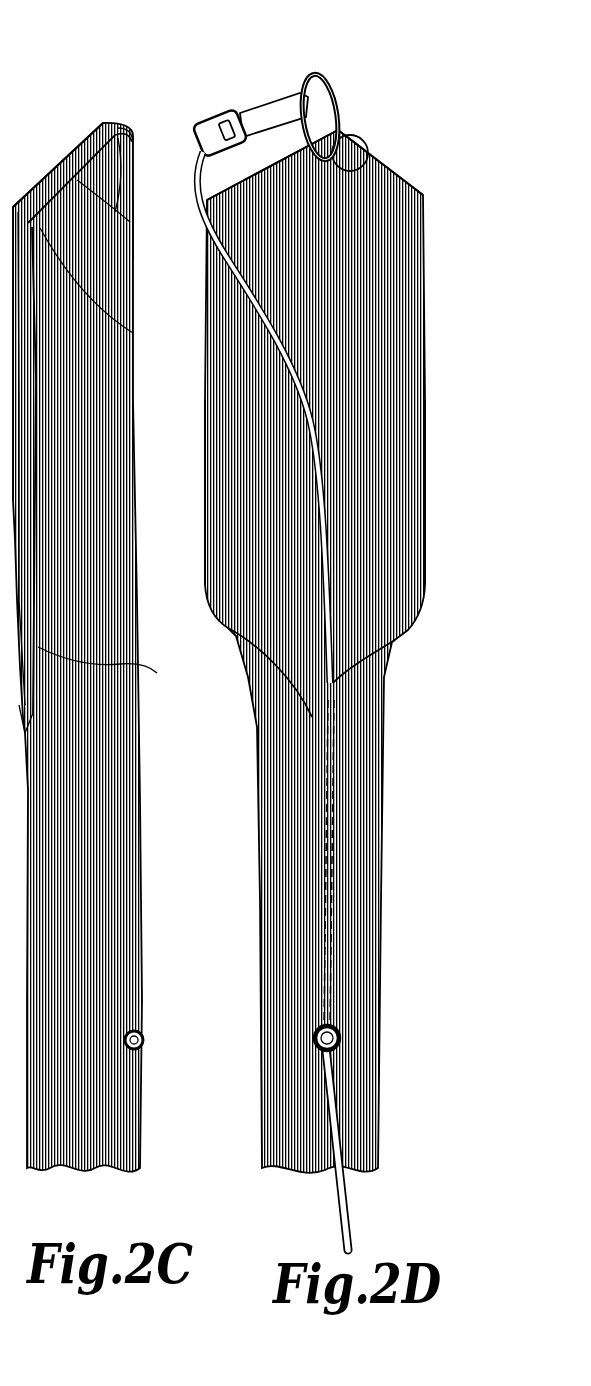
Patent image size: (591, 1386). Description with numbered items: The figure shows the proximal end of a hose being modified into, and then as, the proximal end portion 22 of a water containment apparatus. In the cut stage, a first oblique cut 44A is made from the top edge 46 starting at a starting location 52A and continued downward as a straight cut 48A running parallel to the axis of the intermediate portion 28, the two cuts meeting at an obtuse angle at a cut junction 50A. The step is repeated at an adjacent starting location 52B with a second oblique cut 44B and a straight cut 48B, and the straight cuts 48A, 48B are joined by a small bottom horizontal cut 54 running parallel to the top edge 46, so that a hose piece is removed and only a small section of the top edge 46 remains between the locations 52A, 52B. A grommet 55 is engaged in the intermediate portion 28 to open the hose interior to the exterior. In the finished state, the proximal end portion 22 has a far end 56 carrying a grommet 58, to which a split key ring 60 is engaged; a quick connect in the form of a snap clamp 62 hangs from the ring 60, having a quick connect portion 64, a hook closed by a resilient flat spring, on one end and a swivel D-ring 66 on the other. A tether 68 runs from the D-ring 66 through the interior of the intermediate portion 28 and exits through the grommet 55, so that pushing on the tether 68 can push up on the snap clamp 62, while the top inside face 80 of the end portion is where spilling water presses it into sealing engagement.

In FIG. 2D, the proximal end portion 22 is at (440, 405).
In FIG. 2C, the intermediate portion 28 is at (143, 912).
In FIG. 2C, the first oblique cut 44A is at (132, 235).
In FIG. 2D, the first oblique cut 44A is at (393, 168).
In FIG. 2C, the oblique cut 44B is at (50, 160).
In FIG. 2D, the oblique cut 44B is at (227, 173).
In FIG. 2C, the top edge 46 is at (130, 130).
In FIG. 2C, the straight cut 48A is at (124, 668).
In FIG. 2D, the straight cut 48A is at (425, 527).
In FIG. 2C, the straight cut 48B is at (13, 207).
In FIG. 2D, the straight cut 48B is at (205, 535).
In FIG. 2C, the cut junction 50A is at (133, 333).
In FIG. 2C, the starting location 52A is at (130, 222).
In FIG. 2C, the starting location 52B is at (103, 125).
In FIG. 2C, the bottom horizontal cut 54 is at (25, 737).
In FIG. 2D, the bottom horizontal cut 54 is at (312, 717).
In FIG. 2C, the grommet 55 is at (125, 1030).
In FIG. 2D, the grommet 55 is at (348, 1033).
In FIG. 2D, the far end 56 is at (358, 135).
In FIG. 2D, the grommet 58 is at (368, 157).
In FIG. 2D, the split key ring 60 is at (337, 80).
In FIG. 2D, the snap clamp 62 is at (249, 96).
In FIG. 2D, the quick connect portion 64 is at (277, 100).
In FIG. 2D, the swivel D-ring 66 is at (215, 110).
In FIG. 2D, the tether 68 is at (335, 577).
In FIG. 2D, the top inside face 80 is at (318, 228).